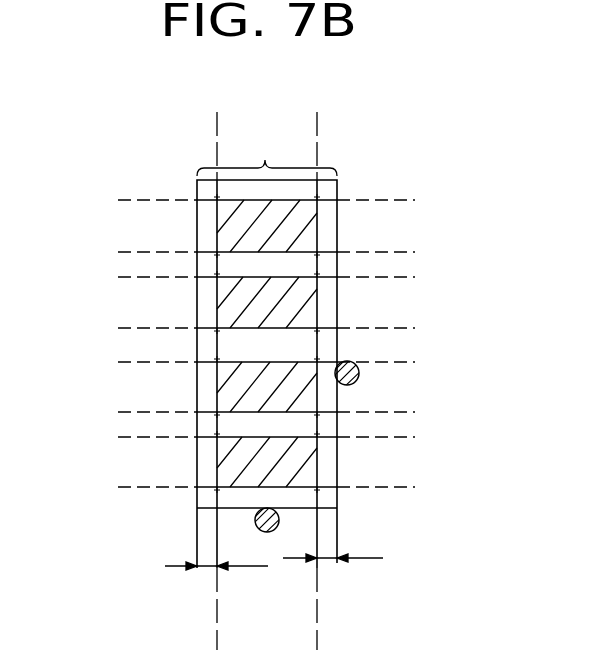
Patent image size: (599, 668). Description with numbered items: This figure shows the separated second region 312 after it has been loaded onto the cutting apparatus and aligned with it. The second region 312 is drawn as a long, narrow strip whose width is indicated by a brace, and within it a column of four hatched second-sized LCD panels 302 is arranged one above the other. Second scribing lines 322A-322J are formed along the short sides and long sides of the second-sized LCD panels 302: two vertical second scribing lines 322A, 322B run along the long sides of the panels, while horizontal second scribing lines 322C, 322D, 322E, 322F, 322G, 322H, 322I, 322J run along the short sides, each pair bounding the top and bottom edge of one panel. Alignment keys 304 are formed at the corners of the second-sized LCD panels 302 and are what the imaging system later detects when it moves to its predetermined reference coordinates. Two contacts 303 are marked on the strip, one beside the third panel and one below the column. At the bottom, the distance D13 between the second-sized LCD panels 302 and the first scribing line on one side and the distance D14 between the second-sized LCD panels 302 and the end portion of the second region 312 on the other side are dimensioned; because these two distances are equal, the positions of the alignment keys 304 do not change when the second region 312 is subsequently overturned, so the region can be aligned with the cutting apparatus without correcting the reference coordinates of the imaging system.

The second-sized LCD panel 302 is at (300, 220).
The contact 303 is at (359, 375).
The alignment key 304 is at (322, 255).
The second region 312 is at (267, 154).
The second scribing line 322A is at (217, 368).
The second scribing line 322B is at (316, 368).
The second scribing line 322C is at (243, 202).
The second scribing line 322D is at (242, 253).
The second scribing line 322E is at (243, 278).
The second scribing line 322F is at (244, 329).
The second scribing line 322G is at (242, 363).
The second scribing line 322H is at (242, 413).
The second scribing line 322I is at (245, 438).
The second scribing line 322J is at (246, 488).
The distance between the second-sized LCD panels and the first scribing line D13 is at (216, 556).
The distance between the second-sized LCD panels and the end portion of the second r D14 is at (336, 548).